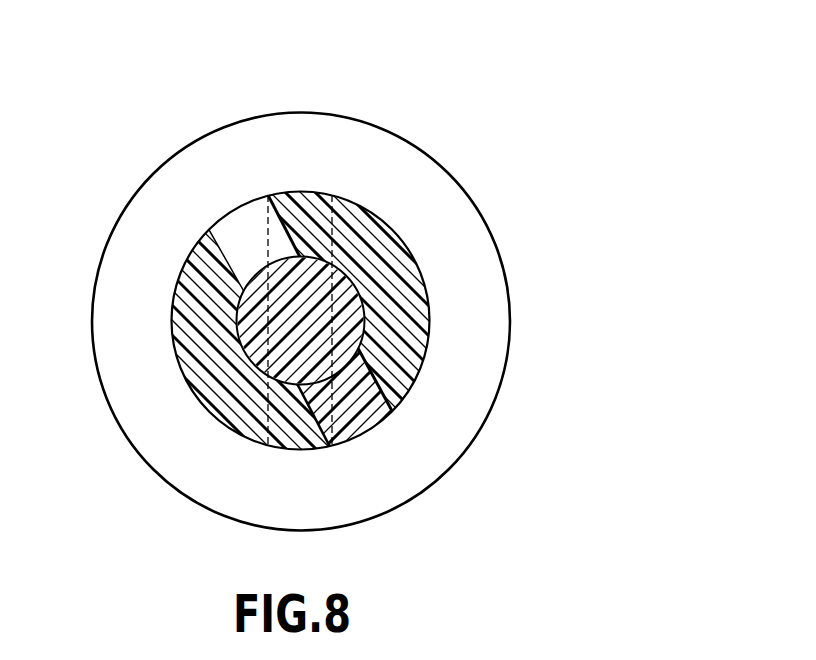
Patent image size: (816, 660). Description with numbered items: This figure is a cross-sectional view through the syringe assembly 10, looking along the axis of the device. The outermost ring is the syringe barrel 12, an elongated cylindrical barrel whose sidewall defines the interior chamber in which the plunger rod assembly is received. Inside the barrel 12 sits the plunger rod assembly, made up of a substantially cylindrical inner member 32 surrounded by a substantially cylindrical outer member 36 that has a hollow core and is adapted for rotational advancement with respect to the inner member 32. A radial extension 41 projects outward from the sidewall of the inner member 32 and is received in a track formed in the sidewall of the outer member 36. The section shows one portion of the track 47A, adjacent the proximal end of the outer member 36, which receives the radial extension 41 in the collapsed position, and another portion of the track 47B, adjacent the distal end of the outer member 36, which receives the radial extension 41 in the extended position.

The syringe assembly 10 is at (589, 97).
The syringe barrel 12 is at (475, 236).
The inner member 32 is at (352, 322).
The outer member 36 is at (407, 373).
The radial extension 41 is at (357, 417).
The portion of the track adjacent the proximal end 47A is at (232, 237).
The portion of the track adjacent the distal end 47B is at (307, 217).